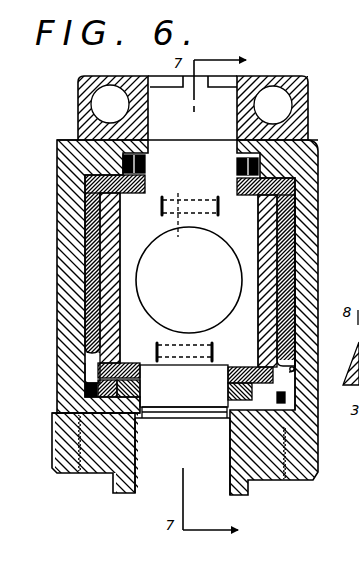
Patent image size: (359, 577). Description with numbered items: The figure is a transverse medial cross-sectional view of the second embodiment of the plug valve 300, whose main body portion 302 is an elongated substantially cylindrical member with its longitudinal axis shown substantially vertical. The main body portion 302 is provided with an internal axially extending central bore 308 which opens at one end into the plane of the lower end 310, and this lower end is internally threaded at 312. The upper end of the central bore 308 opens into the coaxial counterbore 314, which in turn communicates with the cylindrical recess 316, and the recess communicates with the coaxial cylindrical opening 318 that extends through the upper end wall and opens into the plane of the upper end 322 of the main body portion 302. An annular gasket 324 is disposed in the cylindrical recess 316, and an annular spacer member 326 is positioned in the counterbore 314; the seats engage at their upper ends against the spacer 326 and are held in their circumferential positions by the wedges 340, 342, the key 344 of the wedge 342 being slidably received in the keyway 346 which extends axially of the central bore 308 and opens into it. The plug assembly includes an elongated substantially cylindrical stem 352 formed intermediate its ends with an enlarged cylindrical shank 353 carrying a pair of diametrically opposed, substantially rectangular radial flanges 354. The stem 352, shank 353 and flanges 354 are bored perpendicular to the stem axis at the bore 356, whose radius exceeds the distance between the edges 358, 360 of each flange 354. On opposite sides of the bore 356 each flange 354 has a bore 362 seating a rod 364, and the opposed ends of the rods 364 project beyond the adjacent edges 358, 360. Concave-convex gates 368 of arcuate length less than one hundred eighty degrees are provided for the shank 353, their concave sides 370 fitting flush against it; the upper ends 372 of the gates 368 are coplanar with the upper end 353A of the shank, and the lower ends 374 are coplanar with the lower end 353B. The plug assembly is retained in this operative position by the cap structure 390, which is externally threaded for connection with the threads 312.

The valve 300 is at (329, 152).
The main body portion 302 is at (320, 174).
The central bore 308 is at (87, 380).
The lower end 310 is at (70, 478).
The threads 312 is at (272, 481).
The counterbore 314 is at (86, 166).
The cylindrical recess 316 is at (76, 140).
The cylindrical opening 318 is at (152, 140).
The upper end 322 is at (313, 140).
The annular gasket 324 is at (236, 157).
The annular spacer member 326 is at (88, 187).
The wedge 340 is at (88, 255).
The wedge 342 is at (287, 247).
The key 344 is at (297, 280).
The keyway 346 is at (295, 368).
The stem 352 is at (78, 413).
The shank 353 is at (118, 323).
The upper end of shank 353A is at (140, 194).
The lower end of shank 353B is at (248, 362).
The radial flanges 354 is at (204, 193).
The bore 356 is at (203, 230).
The edge of flange 358 is at (160, 333).
The edge of flange 360 is at (217, 336).
The bore 362 is at (178, 218).
The rod 364 is at (185, 193).
The gates 368 is at (255, 268).
The concave side 370 is at (261, 243).
The upper end of gate 372 is at (257, 194).
The lower end of gate 374 is at (116, 369).
The cap structure 390 is at (97, 482).